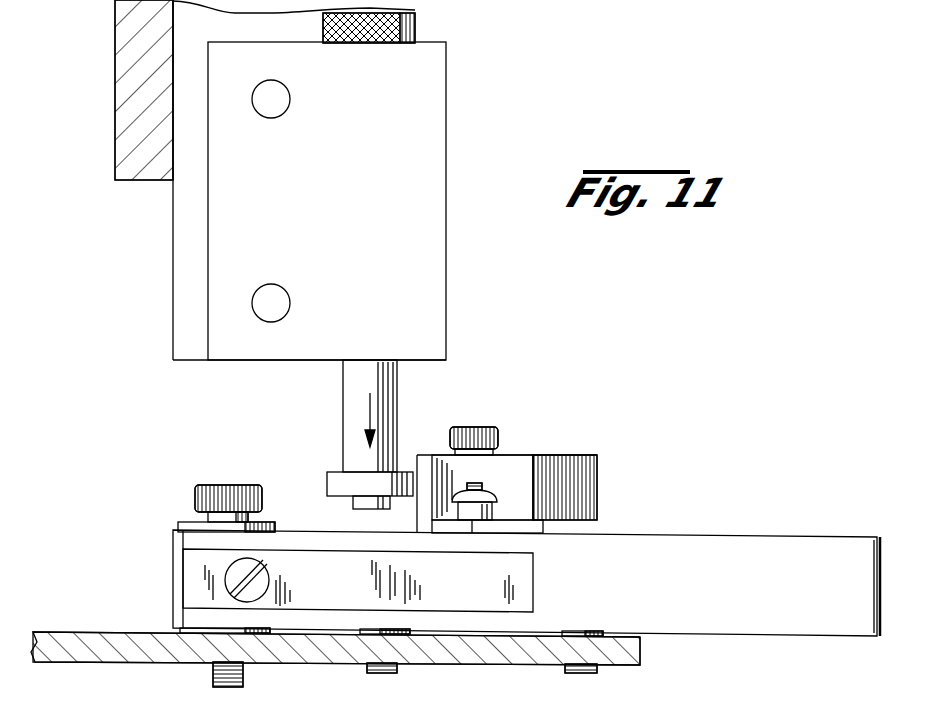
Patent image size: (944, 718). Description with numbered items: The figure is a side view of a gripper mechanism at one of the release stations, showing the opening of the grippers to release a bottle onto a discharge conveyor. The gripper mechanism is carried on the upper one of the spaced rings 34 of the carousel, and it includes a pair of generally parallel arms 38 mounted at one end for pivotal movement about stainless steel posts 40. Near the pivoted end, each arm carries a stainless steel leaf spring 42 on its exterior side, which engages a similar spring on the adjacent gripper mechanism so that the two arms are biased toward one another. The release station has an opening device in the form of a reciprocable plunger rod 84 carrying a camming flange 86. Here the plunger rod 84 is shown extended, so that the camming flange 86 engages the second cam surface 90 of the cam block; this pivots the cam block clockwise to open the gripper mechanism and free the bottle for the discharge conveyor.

The spaced ring 34 is at (158, 655).
The arm 38 is at (735, 542).
The stainless steel post 40 is at (208, 488).
The stainless steel leaf spring 42 is at (525, 585).
The reciprocable plunger rod 84 is at (392, 400).
The camming flange 86 is at (333, 482).
The second cam surface 90 is at (420, 448).